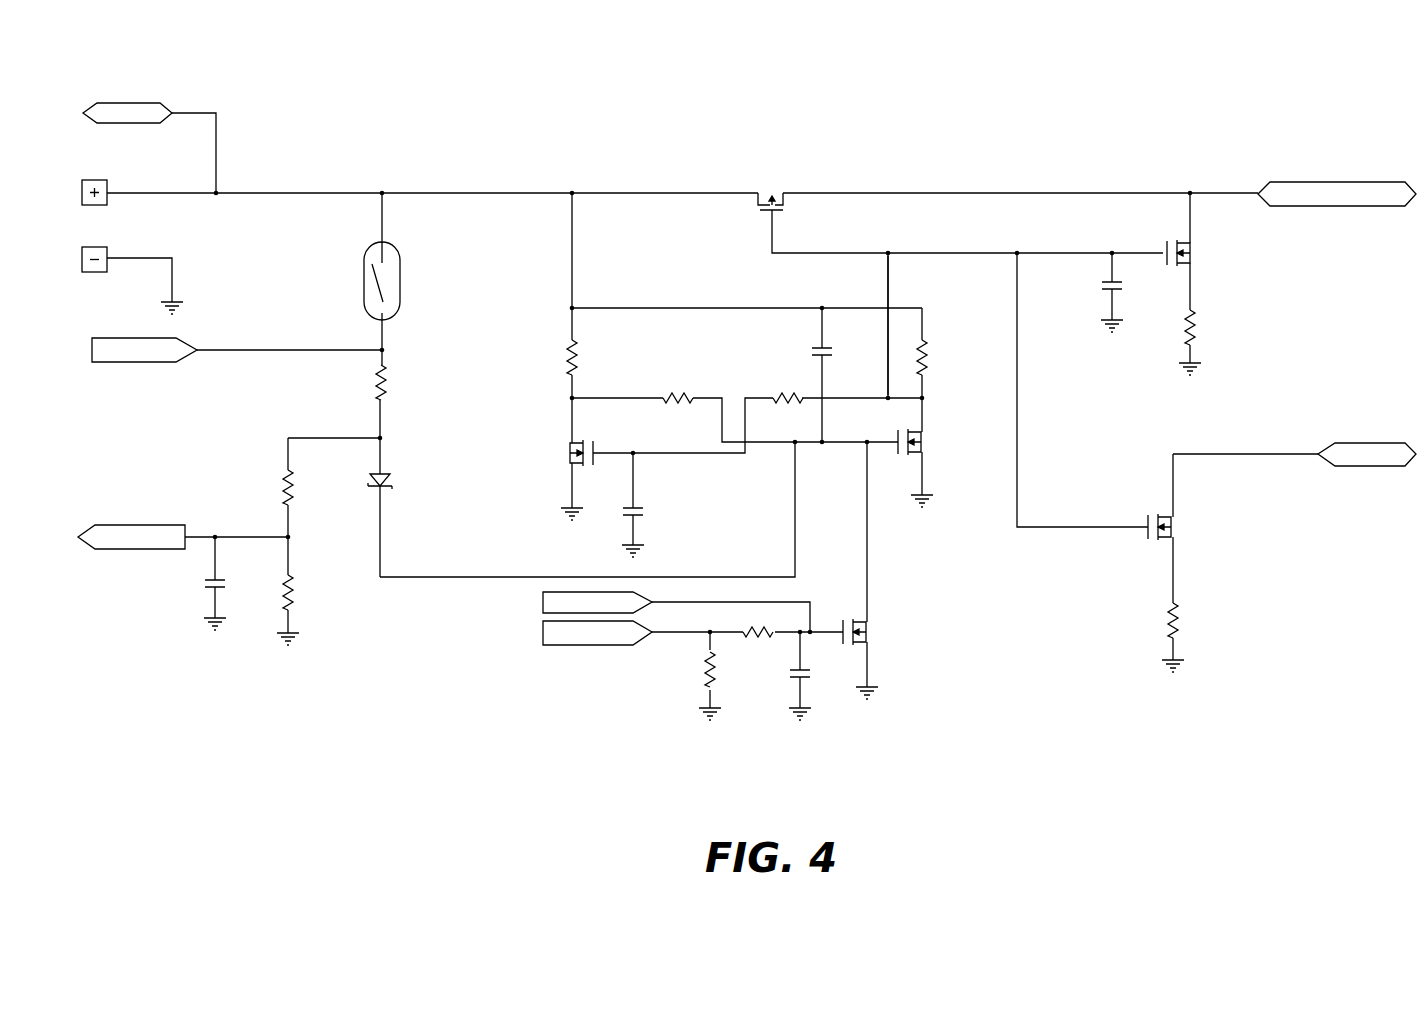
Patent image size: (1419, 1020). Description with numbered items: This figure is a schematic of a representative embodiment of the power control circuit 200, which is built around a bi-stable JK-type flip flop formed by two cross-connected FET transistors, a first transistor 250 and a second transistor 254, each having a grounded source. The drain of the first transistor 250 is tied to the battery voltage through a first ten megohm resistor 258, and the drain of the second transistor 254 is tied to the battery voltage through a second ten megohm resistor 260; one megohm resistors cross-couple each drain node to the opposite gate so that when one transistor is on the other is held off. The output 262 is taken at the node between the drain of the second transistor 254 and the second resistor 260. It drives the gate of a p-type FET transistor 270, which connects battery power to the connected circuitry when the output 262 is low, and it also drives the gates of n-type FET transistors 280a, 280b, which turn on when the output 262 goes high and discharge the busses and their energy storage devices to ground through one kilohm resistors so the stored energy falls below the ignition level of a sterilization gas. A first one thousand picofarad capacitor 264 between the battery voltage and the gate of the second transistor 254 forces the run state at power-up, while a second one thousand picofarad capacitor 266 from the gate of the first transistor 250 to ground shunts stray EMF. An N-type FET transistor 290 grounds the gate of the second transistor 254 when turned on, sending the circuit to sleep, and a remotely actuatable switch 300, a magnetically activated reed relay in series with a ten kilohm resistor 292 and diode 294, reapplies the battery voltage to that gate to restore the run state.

The power control circuit 200 is at (446, 126).
The remotely actuatable switch 300 is at (364, 258).
The p-type FET transistor 270 is at (790, 189).
The output 262 is at (888, 292).
The second 10 MΩ resistor 260 is at (930, 330).
The first 1000 pF capacitor 264 is at (810, 353).
The first 10 MΩ resistor 258 is at (600, 345).
The first transistor 250 is at (570, 497).
The second 1000 pF capacitor 266 is at (650, 500).
The second transistor 254 is at (927, 462).
The 10 KΩ resistor 292 is at (410, 423).
The diode 294 is at (385, 471).
The n-type FET transistor 280a is at (1200, 268).
The n-type FET transistor 280b is at (1182, 542).
The N-type FET transistor 290 is at (877, 650).